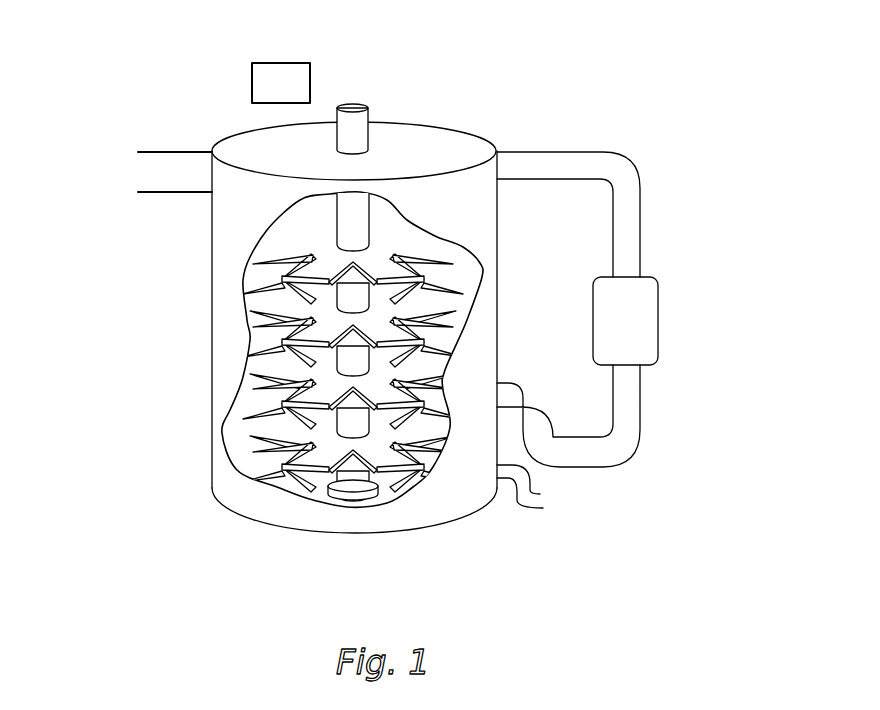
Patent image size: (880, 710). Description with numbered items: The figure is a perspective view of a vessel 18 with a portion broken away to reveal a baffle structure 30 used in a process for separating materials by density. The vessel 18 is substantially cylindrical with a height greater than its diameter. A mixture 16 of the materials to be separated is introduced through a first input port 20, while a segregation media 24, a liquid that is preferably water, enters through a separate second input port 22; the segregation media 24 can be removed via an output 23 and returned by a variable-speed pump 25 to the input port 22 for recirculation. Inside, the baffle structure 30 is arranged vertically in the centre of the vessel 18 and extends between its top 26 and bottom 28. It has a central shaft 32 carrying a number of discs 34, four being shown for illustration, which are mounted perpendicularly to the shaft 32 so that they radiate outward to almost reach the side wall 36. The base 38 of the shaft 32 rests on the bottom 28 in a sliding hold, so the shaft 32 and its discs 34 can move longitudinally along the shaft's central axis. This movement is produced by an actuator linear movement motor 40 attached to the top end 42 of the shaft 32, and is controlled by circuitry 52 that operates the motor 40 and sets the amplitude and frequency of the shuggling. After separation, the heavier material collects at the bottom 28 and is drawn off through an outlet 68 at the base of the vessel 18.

The mixture 16 is at (145, 174).
The vessel 18 is at (527, 117).
The first input port 20 is at (145, 142).
The second input port 22 is at (566, 152).
The output 23 is at (524, 397).
The segregation media 24 is at (145, 174).
The pump 25 is at (658, 313).
The top 26 is at (308, 165).
The bottom 28 is at (238, 522).
The baffle structure 30 is at (352, 382).
The central shaft 32 is at (347, 417).
The discs 34 is at (263, 321).
The side wall 36 is at (227, 234).
The base 38 is at (352, 477).
The actuator linear movement motor 40 is at (362, 130).
The top end 42 is at (360, 213).
The circuitry 52 is at (353, 106).
The outlet 68 is at (520, 509).